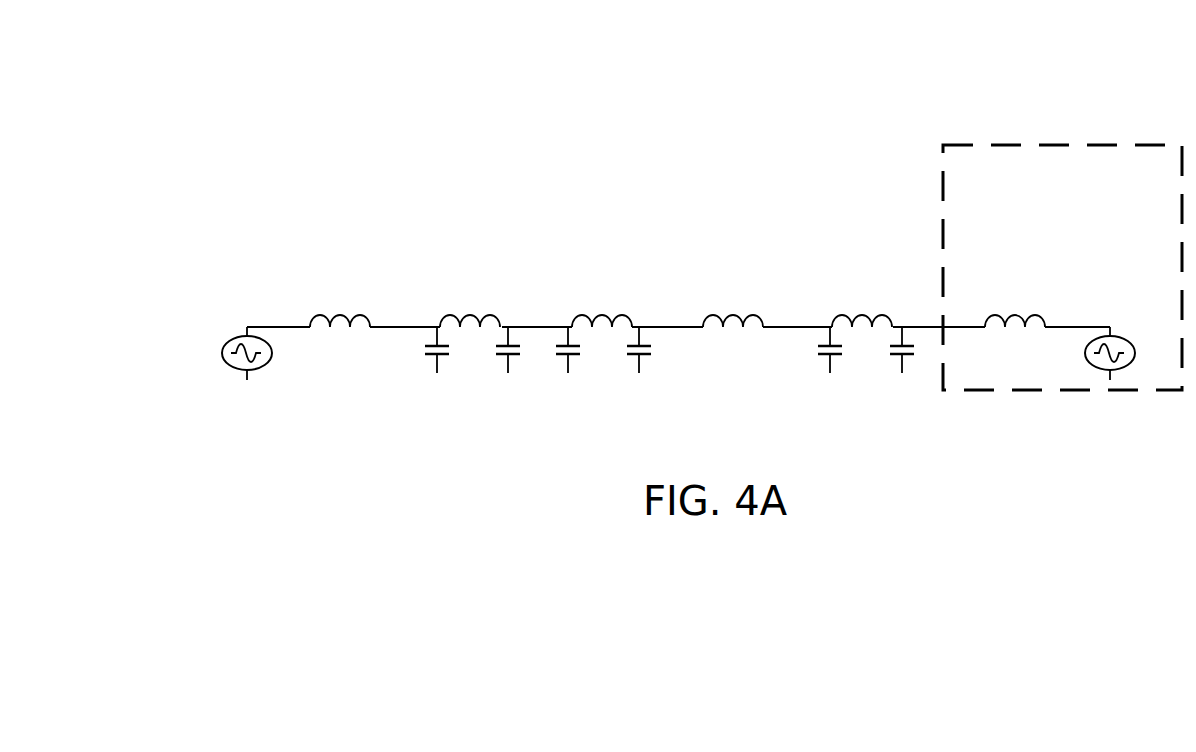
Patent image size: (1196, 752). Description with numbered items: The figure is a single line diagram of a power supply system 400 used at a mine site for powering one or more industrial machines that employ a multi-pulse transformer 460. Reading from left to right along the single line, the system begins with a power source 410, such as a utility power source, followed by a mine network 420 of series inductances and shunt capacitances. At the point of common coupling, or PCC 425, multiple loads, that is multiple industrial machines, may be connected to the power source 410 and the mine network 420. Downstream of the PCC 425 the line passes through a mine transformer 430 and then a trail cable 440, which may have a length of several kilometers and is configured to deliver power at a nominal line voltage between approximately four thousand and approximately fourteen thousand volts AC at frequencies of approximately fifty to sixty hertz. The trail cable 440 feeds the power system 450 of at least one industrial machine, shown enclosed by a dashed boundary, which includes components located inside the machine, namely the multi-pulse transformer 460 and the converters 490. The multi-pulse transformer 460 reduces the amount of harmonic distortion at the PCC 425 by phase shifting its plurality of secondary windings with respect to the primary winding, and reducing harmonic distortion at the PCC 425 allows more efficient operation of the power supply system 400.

The power supply system 400 is at (424, 107).
The power source 410 is at (253, 304).
The mine network 420 is at (448, 280).
The point of common coupling (PCC) 425 is at (641, 288).
The mine transformer 430 is at (694, 242).
The trail cable 440 is at (828, 242).
The power system 450 is at (1070, 135).
The multi-pulse transformer 460 is at (1026, 237).
The converters 490 is at (1114, 306).